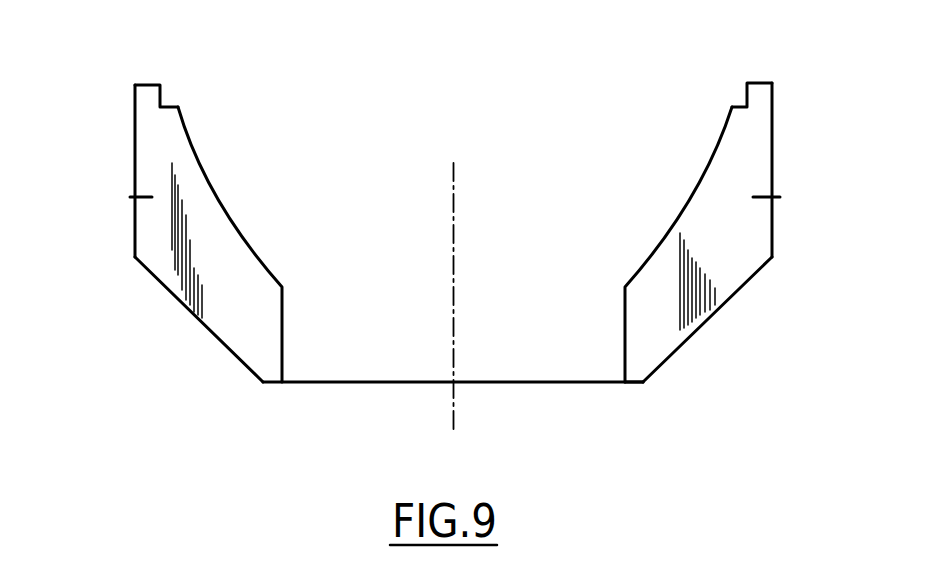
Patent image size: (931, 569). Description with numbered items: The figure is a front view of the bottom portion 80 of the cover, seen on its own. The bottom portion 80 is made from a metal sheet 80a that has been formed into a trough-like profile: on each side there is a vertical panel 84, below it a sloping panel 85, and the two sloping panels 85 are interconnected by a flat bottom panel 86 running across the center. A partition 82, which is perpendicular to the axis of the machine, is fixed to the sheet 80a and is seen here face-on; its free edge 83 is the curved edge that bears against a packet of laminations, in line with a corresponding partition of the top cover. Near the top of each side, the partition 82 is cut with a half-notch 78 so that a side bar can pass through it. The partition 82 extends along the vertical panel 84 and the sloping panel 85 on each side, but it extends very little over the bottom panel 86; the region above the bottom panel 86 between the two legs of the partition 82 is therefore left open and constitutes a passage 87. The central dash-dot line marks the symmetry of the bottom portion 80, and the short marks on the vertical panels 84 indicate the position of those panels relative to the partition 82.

The half-notch 78 is at (171, 98).
The bottom portion 80 is at (723, 303).
The metal sheet 80a is at (597, 384).
The partition 82 is at (717, 210).
The free edge 83 is at (232, 223).
The vertical panel 84 is at (134, 231).
The sloping panel 85 is at (167, 290).
The bottom panel 86 is at (342, 382).
The passage 87 is at (535, 348).